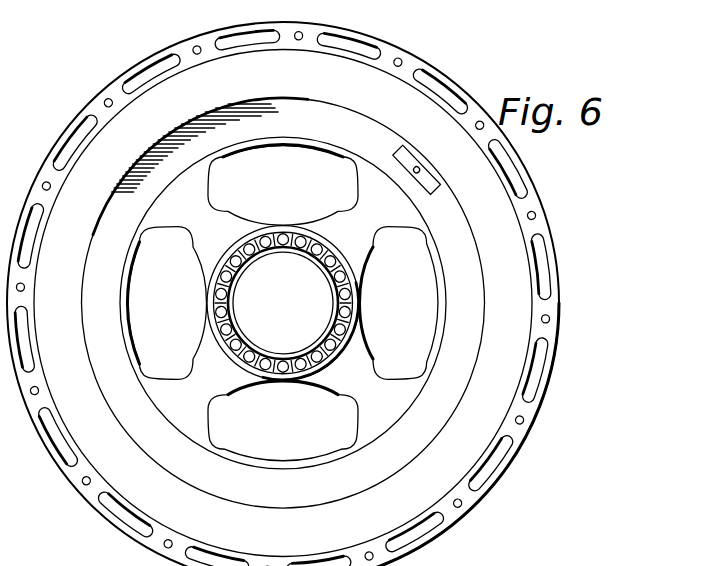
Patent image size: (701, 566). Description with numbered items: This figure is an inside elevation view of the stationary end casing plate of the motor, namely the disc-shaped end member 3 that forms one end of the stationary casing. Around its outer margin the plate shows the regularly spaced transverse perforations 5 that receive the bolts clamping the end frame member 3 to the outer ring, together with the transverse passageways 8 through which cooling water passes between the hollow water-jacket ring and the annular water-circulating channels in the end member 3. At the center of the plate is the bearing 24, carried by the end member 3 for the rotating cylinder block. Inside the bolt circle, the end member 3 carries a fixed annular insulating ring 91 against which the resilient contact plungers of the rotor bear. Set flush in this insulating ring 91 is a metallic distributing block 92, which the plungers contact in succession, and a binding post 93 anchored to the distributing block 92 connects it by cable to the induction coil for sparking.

The disc-shaped end member 3 is at (557, 323).
The transverse perforation 5 is at (534, 217).
The transverse passageway 8 is at (507, 165).
The bearing 24 is at (357, 329).
The annular insulating ring 91 is at (466, 255).
The metallic distributing block 92 is at (416, 162).
The binding post 93 is at (421, 173).